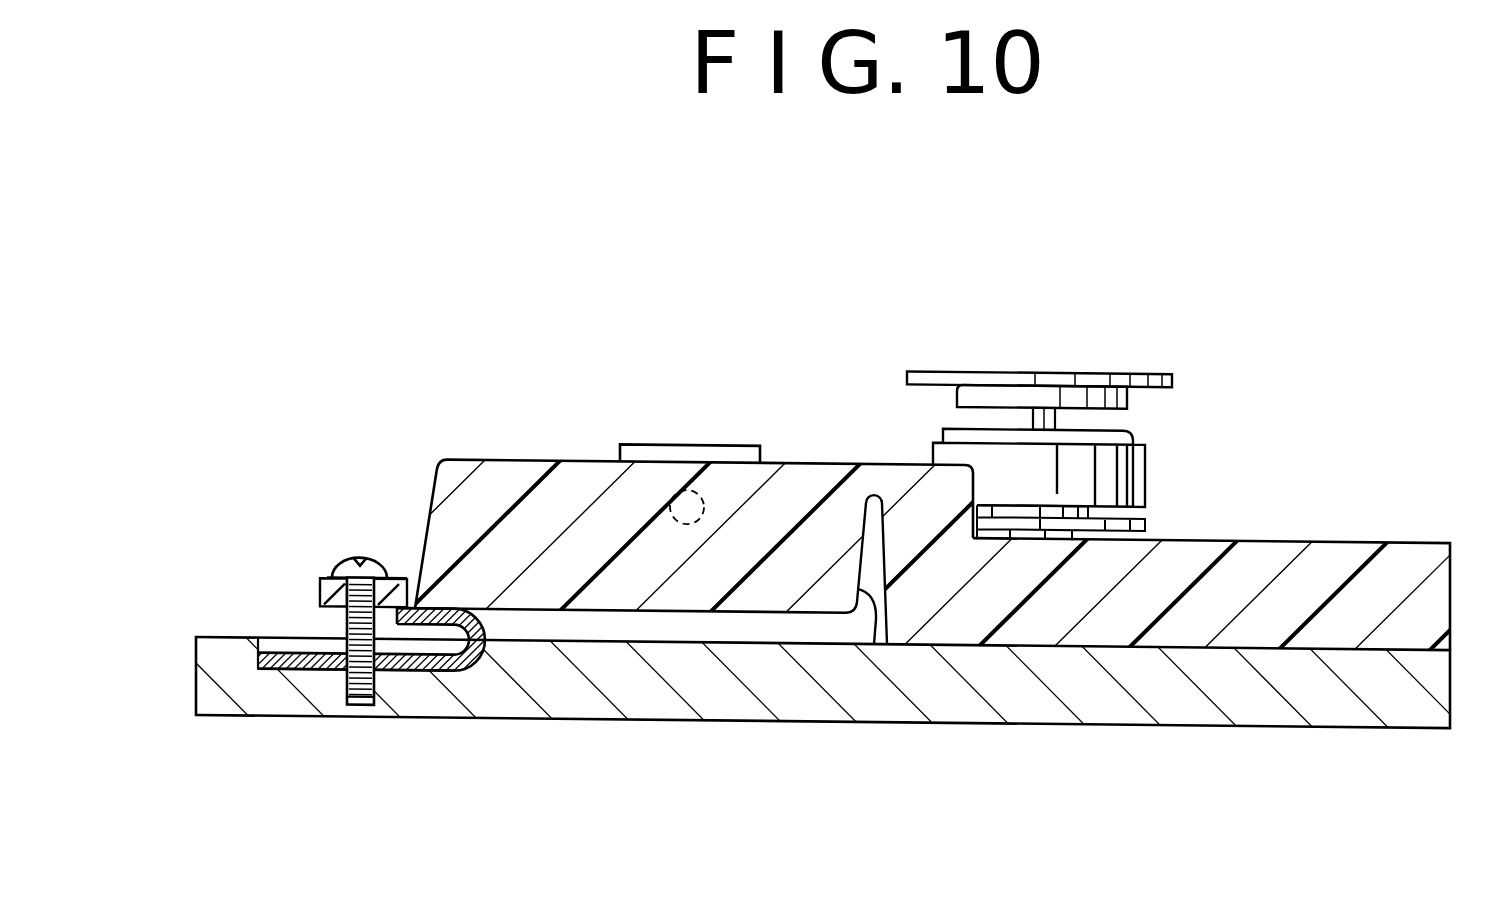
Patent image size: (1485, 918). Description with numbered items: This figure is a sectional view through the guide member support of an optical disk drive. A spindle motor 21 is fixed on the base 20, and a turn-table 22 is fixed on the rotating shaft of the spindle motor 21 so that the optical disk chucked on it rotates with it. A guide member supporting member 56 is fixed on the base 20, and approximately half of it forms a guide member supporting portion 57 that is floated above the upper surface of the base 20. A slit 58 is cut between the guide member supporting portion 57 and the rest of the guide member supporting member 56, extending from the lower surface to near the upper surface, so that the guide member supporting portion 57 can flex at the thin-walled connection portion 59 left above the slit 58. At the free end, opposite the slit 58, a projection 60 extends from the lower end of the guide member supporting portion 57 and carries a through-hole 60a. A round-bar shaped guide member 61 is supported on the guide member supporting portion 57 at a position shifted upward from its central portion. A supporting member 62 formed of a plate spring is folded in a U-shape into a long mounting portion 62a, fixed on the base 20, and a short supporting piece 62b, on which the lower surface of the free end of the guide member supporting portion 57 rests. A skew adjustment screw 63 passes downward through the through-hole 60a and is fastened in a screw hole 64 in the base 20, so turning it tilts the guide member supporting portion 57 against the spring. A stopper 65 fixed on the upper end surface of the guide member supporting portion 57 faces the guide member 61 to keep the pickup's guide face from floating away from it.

The base 20 is at (1393, 693).
The spindle motor 21 is at (1147, 458).
The turn-table 22 is at (1088, 364).
The guide member supporting member 56 is at (1387, 530).
The guide member supporting portion 57 is at (678, 600).
The slit 58 is at (878, 590).
The thin-walled connection portion 59 is at (828, 457).
The projection 60 is at (320, 592).
The through-hole 60a is at (362, 558).
The round-bar shaped guide member 61 is at (712, 496).
The supporting member 62 is at (371, 599).
The mounting portion 62a is at (268, 667).
The supporting piece 62b is at (443, 609).
The skew adjustment screw 63 is at (343, 556).
The screw hole 64 is at (328, 652).
The stopper 65 is at (660, 440).